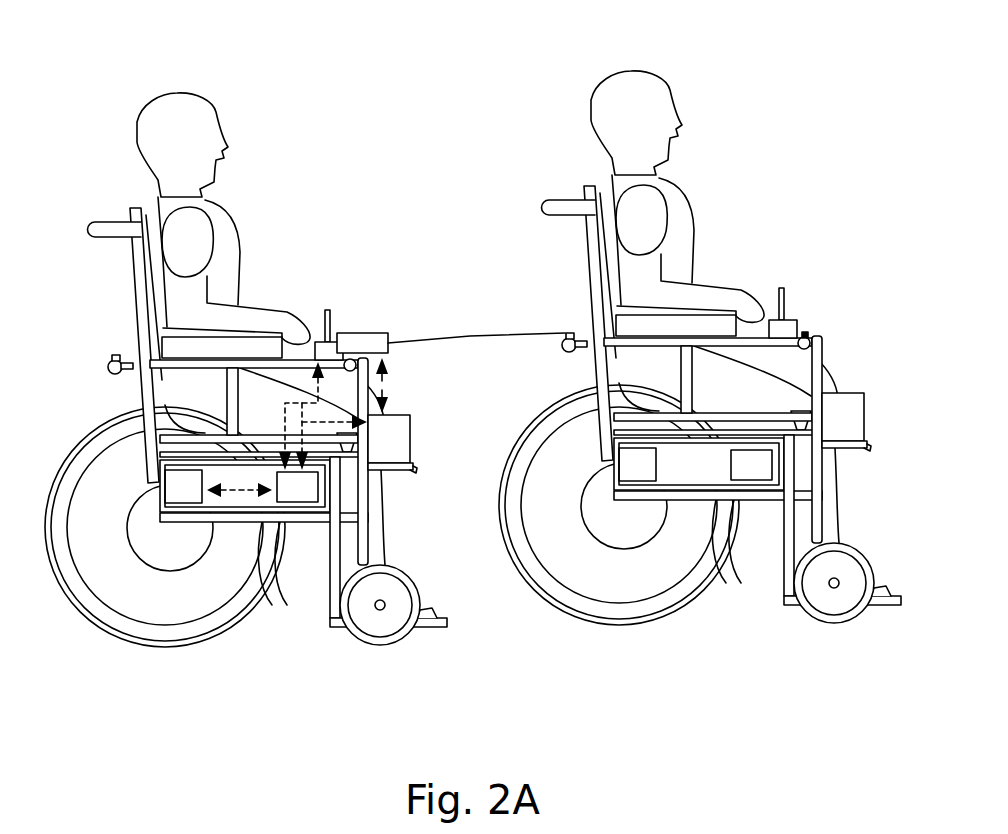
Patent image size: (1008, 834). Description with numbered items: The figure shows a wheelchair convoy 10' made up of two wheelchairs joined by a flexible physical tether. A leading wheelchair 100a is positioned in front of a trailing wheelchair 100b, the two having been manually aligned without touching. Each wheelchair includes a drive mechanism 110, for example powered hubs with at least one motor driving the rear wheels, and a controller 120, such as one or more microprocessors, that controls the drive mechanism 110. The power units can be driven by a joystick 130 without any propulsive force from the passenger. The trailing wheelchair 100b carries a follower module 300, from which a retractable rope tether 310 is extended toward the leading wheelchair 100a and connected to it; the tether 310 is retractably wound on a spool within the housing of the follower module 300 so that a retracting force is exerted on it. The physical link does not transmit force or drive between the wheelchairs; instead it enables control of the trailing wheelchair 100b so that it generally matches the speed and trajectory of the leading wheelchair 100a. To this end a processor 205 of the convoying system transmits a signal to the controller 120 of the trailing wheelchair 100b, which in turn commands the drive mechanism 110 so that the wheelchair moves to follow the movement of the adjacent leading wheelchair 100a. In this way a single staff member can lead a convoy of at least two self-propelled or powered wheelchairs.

The wheelchair convoy 10' is at (473, 368).
The leading wheelchair 100a is at (577, 178).
The trailing wheelchair 100b is at (122, 202).
The drive mechanism 110 is at (177, 513).
The controller 120 is at (275, 500).
The joystick 130 is at (305, 297).
The processor 205 is at (403, 407).
The follower module 300 is at (345, 307).
The retractable rope tether 310 is at (438, 320).